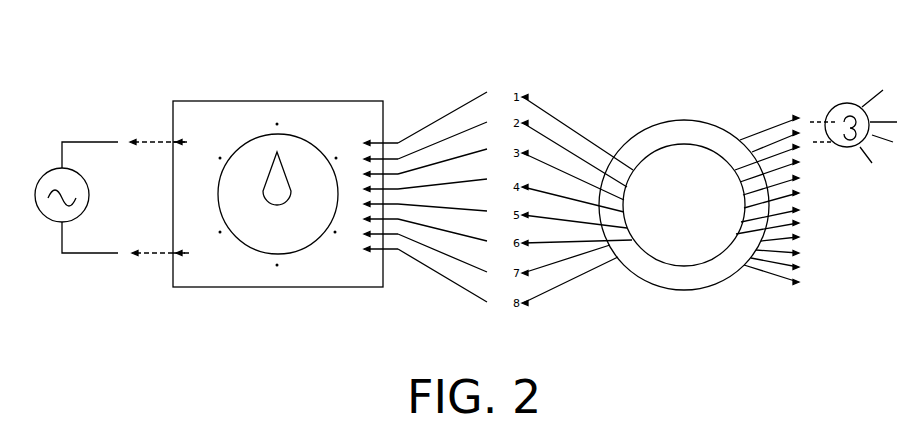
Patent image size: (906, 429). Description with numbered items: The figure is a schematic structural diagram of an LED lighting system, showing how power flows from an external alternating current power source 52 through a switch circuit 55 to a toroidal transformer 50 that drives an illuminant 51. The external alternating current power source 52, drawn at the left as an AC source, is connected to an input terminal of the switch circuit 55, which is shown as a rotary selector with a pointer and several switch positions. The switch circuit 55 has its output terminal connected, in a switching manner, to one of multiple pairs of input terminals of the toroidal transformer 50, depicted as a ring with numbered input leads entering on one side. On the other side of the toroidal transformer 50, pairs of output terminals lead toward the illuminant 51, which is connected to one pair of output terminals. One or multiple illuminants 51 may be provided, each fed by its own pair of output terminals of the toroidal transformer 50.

The toroidal transformer 50 is at (678, 142).
The illuminant 51 is at (839, 125).
The external alternating current power source 52 is at (58, 187).
The switch circuit 55 is at (333, 125).